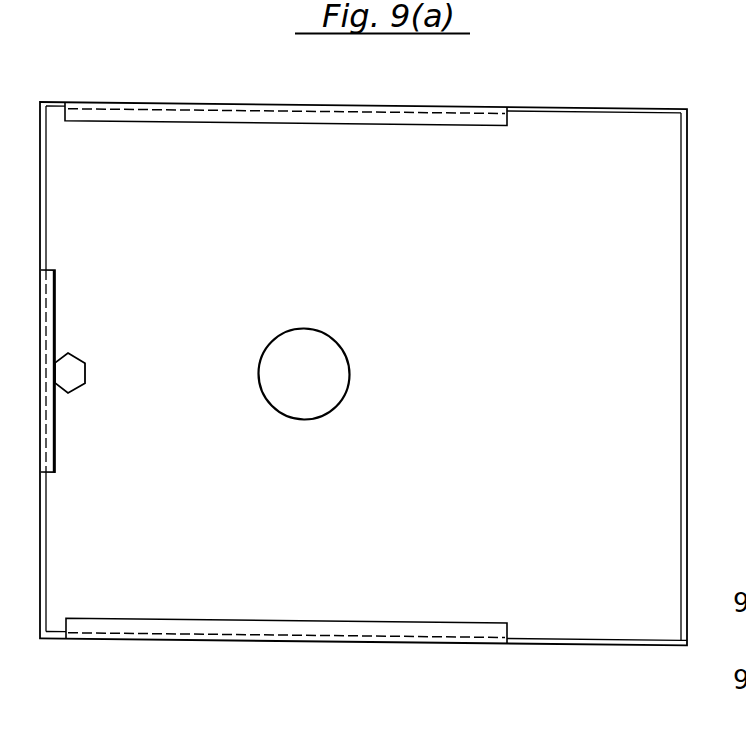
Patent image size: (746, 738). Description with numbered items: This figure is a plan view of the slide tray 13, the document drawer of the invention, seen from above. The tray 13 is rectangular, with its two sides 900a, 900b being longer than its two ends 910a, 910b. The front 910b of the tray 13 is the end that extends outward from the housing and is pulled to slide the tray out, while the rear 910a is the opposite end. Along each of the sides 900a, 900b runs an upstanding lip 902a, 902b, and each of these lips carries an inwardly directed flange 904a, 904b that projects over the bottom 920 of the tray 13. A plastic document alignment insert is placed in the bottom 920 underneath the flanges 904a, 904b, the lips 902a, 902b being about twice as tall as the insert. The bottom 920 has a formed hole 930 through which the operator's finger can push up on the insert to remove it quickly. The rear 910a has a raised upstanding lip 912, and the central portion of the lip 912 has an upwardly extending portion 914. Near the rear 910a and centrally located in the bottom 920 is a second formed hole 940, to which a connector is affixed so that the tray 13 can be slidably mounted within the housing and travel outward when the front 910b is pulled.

The tray 13 is at (191, 101).
The side of tray 900a is at (346, 641).
The side of tray 900b is at (298, 107).
The upstanding lip 902a is at (547, 642).
The upstanding lip 902b is at (626, 114).
The inwardly directed flange 904a is at (362, 622).
The inwardly directed flange 904b is at (378, 122).
The rear of tray 910a is at (45, 203).
The front of tray 910b is at (682, 319).
The upstanding lip 912 is at (46, 536).
The upwardly extending portion 914 is at (50, 423).
The bottom of tray 920 is at (527, 365).
The formed hole 930 is at (275, 347).
The second formed hole 940 is at (78, 378).